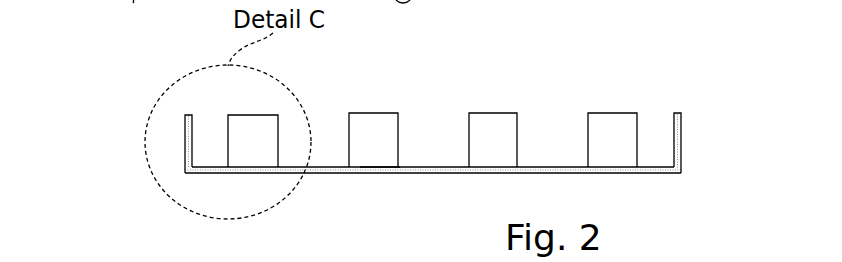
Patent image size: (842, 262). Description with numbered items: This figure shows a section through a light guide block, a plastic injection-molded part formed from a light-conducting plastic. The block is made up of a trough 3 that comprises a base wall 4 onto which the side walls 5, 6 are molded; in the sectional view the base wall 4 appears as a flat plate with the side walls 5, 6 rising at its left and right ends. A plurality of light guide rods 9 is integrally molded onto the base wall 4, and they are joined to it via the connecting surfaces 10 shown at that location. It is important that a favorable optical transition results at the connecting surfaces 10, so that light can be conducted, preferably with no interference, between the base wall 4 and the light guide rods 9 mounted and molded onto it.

The trough 3 is at (555, 138).
The base wall 4 is at (433, 173).
The side wall 5 is at (682, 142).
The side wall 6 is at (185, 145).
The light guide rods 9 is at (390, 113).
The connecting surfaces 10 is at (368, 157).